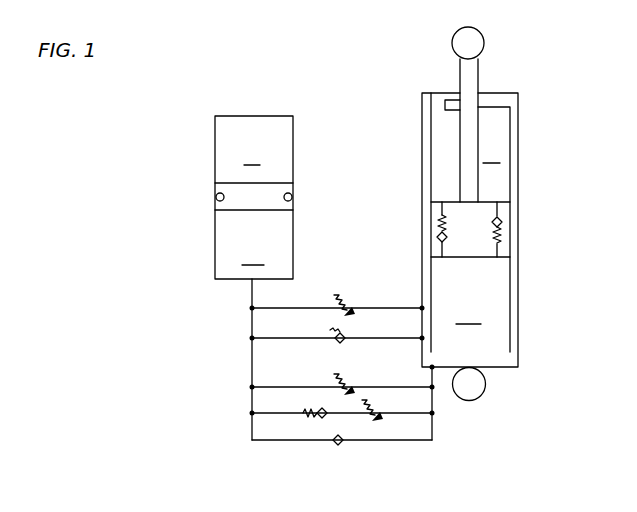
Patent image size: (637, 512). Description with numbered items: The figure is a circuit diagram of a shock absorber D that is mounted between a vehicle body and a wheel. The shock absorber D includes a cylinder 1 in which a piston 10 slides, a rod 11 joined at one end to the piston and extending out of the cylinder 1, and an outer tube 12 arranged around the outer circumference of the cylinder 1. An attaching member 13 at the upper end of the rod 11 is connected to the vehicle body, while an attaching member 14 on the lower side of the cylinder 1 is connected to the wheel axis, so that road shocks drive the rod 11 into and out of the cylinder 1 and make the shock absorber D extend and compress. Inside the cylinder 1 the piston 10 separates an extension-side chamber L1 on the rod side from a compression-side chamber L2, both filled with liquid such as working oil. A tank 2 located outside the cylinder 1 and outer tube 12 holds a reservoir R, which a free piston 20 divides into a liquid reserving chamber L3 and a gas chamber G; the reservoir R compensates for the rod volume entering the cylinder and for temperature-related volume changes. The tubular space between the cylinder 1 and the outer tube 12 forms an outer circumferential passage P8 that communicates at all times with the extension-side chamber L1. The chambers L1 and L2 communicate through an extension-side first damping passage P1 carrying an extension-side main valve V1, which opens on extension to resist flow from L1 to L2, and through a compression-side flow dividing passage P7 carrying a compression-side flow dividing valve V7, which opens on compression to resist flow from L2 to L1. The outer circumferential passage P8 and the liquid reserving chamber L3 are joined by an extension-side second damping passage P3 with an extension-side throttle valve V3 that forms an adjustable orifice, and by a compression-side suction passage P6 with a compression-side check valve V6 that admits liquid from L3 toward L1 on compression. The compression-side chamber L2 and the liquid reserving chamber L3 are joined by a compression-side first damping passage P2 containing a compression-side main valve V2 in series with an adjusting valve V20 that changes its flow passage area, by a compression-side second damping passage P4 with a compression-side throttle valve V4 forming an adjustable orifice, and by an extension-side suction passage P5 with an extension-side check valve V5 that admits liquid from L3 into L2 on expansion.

The shock absorber D is at (533, 97).
The reservoir R is at (293, 135).
The cylinder 1 is at (511, 172).
The tank 2 is at (215, 151).
The piston 10 is at (505, 254).
The rod 11 is at (460, 75).
The outer tube 12 is at (421, 142).
The attaching member 13 is at (484, 50).
The attaching member 14 is at (478, 394).
The free piston 20 is at (288, 183).
The extension-side chamber L1 is at (495, 153).
The compression-side chamber L2 is at (468, 314).
The liquid reserving chamber L3 is at (254, 255).
The gas chamber G is at (252, 155).
The extension-side first damping passage P1 is at (501, 207).
The compression-side first damping passage P2 is at (293, 414).
The extension-side second damping passage P3 is at (383, 307).
The compression-side second damping passage P4 is at (292, 386).
The extension-side suction passage P5 is at (310, 441).
The compression-side suction passage P6 is at (377, 338).
The compression-side flow dividing passage P7 is at (441, 212).
The outer circumferential passage P8 is at (514, 290).
The extension-side main valve V1 is at (503, 221).
The compression-side main valve V2 is at (316, 411).
The extension-side throttle valve V3 is at (341, 299).
The compression-side throttle valve V4 is at (345, 384).
The extension-side check valve V5 is at (341, 445).
The compression-side check valve V6 is at (337, 336).
The compression-side flow dividing valve V7 is at (441, 238).
The adjusting valve V20 is at (375, 410).